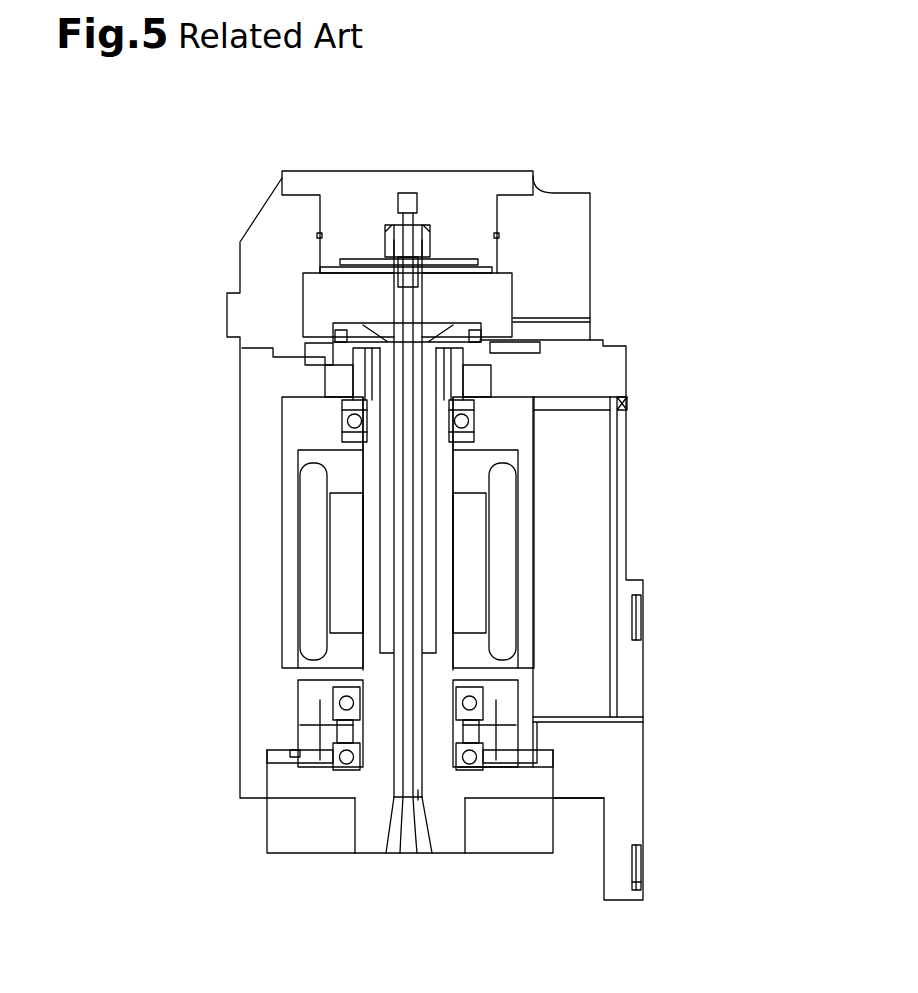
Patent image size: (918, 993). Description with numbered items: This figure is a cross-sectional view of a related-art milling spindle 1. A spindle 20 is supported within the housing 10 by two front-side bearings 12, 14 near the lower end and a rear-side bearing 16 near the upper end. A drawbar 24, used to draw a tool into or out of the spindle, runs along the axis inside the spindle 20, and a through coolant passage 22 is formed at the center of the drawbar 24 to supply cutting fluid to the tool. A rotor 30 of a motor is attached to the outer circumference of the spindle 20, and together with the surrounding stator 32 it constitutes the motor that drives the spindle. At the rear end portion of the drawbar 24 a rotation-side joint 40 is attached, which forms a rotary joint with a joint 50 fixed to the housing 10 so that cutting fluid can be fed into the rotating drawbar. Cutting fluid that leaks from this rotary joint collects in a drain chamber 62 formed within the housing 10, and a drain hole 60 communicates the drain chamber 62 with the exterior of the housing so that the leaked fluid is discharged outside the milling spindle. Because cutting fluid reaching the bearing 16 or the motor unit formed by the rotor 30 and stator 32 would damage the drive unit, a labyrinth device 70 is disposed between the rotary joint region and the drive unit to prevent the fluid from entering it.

The milling spindle 1 is at (733, 247).
The housing 10 is at (257, 560).
The front-side bearing 12 is at (330, 763).
The front-side bearing 14 is at (330, 697).
The rear-side bearing 16 is at (340, 428).
The spindle 20 is at (373, 835).
The through coolant passage 22 is at (406, 800).
The drawbar 24 is at (420, 800).
The rotor 30 is at (473, 575).
The stator 32 is at (508, 528).
The rotation-side joint 40 is at (427, 253).
The joint 50 is at (422, 238).
The drain hole 60 is at (583, 320).
The drain chamber 62 is at (490, 288).
The labyrinth device 70 is at (327, 340).